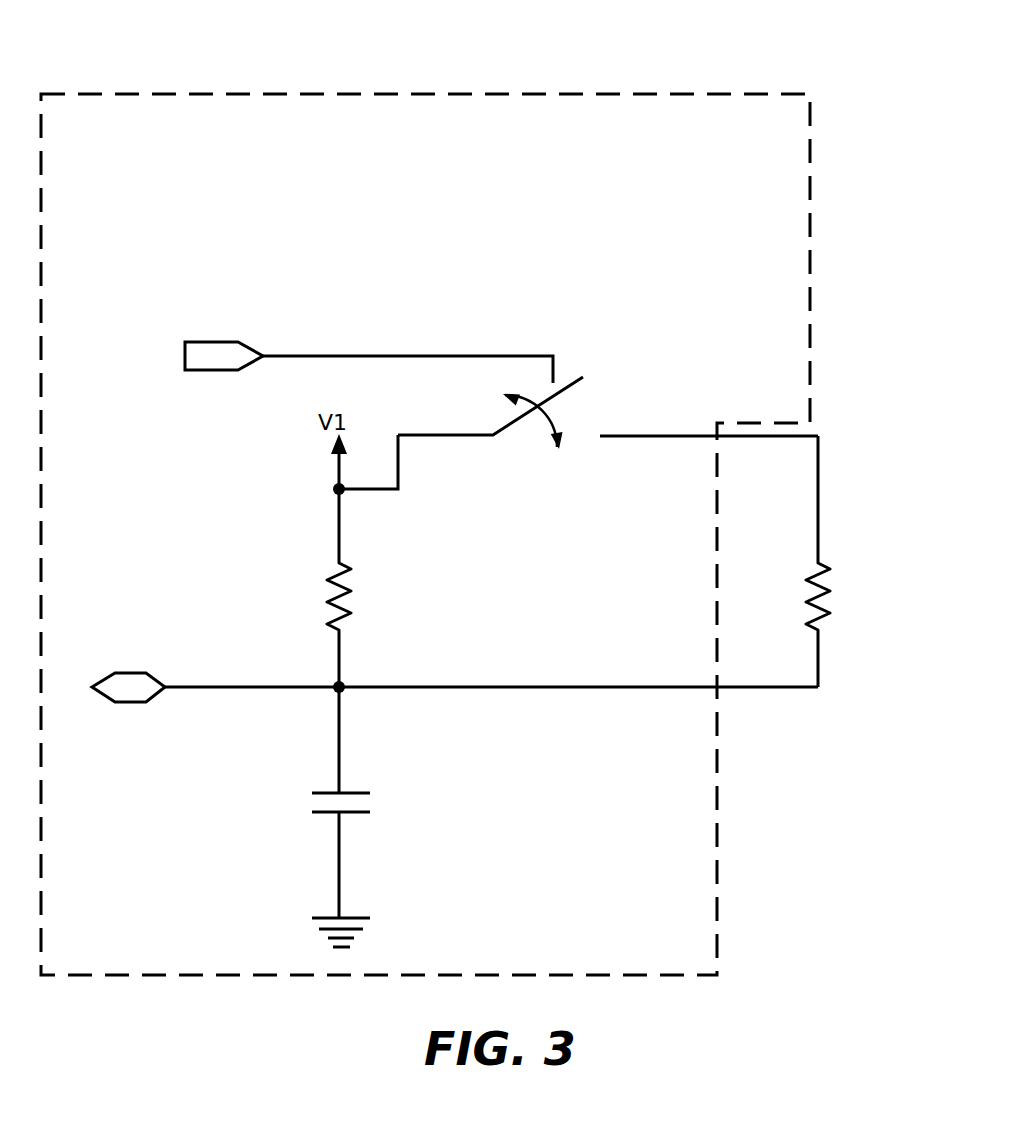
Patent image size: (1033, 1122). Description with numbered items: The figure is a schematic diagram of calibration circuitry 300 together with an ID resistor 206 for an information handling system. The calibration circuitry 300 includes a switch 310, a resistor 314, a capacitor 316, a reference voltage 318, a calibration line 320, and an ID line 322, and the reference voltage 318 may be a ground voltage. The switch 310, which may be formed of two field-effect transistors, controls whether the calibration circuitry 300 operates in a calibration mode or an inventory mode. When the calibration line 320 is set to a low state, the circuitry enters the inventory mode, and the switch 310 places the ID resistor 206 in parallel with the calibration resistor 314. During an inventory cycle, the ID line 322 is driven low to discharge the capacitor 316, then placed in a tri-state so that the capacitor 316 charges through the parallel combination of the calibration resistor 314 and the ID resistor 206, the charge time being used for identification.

The calibration circuitry 300 is at (648, 92).
The switch 310 is at (572, 383).
The resistor 314 is at (338, 563).
The capacitor 316 is at (333, 793).
The reference voltage 318 is at (323, 918).
The calibration line 320 is at (222, 342).
The ID line 322 is at (126, 673).
The ID resistor 206 is at (812, 563).